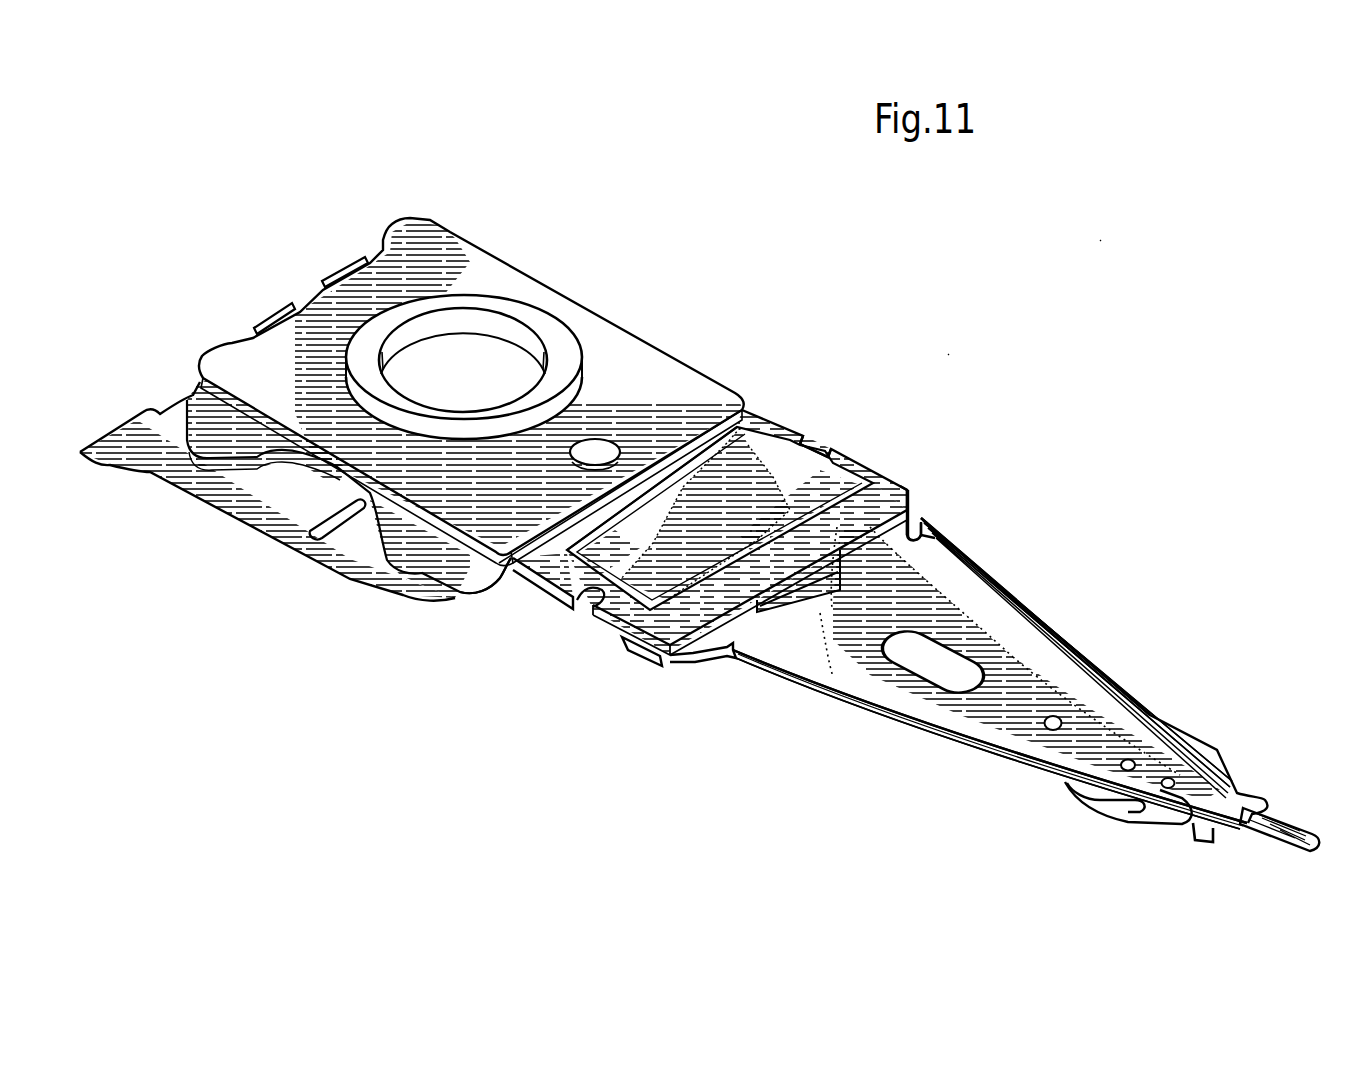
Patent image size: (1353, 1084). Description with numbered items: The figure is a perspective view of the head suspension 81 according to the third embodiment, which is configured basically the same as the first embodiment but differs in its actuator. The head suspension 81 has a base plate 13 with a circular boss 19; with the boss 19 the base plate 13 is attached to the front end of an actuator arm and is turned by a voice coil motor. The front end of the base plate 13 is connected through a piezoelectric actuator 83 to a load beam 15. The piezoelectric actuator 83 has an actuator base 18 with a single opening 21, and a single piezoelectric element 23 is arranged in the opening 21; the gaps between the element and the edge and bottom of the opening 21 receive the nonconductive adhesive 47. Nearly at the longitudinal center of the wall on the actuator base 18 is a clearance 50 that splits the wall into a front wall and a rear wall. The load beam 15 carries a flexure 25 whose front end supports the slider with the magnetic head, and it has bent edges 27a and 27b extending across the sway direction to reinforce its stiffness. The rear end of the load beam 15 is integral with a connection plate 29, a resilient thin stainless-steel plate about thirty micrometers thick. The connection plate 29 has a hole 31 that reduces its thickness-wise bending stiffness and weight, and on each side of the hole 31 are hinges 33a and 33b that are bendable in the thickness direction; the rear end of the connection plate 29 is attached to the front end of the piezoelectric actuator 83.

The base plate 13 is at (557, 305).
The load beam 15 is at (1030, 670).
The actuator base 18 is at (897, 477).
The circular boss 19 is at (470, 318).
The opening 21 is at (740, 413).
The piezoelectric element 23 is at (760, 455).
The flexure 25 is at (1133, 807).
The bent edge 27a is at (993, 580).
The bent edge 27b is at (910, 723).
The connection plate 29 is at (913, 513).
The hole 31 is at (732, 648).
The hinge 33a is at (920, 527).
The hinge 33b is at (750, 607).
The nonconductive adhesive 47 is at (832, 466).
The clearance 50 is at (818, 447).
The head suspension 81 is at (1104, 238).
The piezoelectric actuator 83 is at (950, 352).